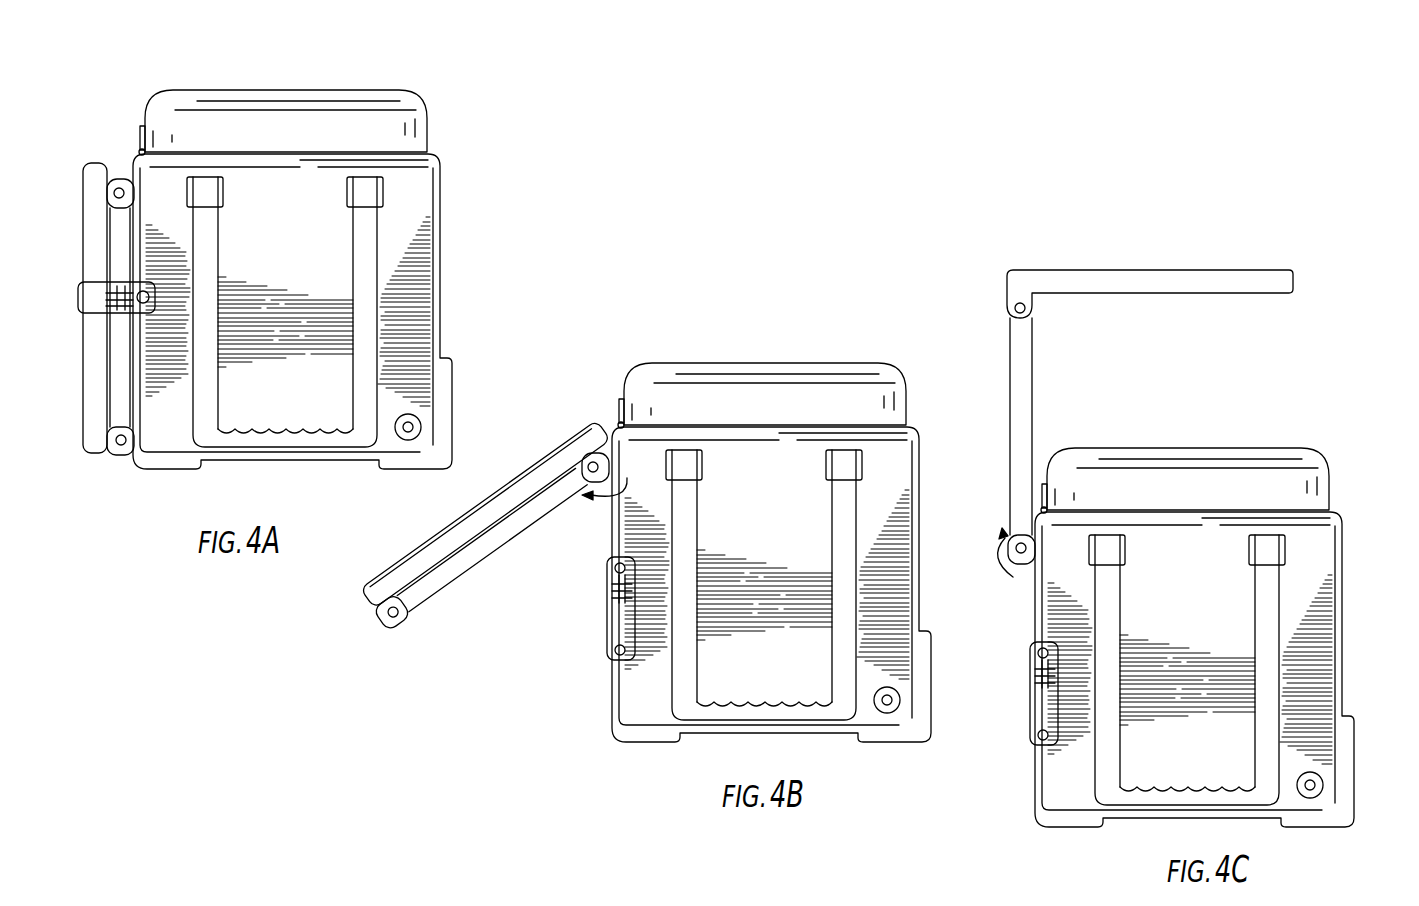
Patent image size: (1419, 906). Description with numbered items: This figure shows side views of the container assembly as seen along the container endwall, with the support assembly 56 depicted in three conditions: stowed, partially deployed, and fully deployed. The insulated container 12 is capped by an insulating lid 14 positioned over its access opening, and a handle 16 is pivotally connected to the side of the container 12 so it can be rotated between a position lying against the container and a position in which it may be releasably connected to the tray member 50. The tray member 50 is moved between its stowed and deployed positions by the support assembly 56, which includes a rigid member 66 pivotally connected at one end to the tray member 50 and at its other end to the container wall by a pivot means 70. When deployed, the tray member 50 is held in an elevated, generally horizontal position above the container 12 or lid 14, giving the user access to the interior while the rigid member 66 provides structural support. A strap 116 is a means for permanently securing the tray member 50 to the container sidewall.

In FIG. 4A, the insulated container 12 is at (462, 312).
In FIG. 4B, the insulated container 12 is at (756, 584).
In FIG. 4C, the insulated container 12 is at (1147, 669).
In FIG. 4A, the insulating lid 14 is at (295, 130).
In FIG. 4B, the insulating lid 14 is at (762, 374).
In FIG. 4C, the insulating lid 14 is at (1185, 444).
In FIG. 4A, the handle 16 is at (400, 396).
In FIG. 4B, the handle 16 is at (788, 585).
In FIG. 4C, the handle 16 is at (1248, 670).
In FIG. 4A, the tray member 50 is at (83, 200).
In FIG. 4B, the tray member 50 is at (485, 499).
In FIG. 4C, the tray member 50 is at (1150, 268).
In FIG. 4A, the support assembly 56 is at (108, 120).
In FIG. 4B, the rigid member 66 is at (481, 548).
In FIG. 4C, the rigid member 66 is at (998, 426).
In FIG. 4A, the pivot means 70 is at (122, 180).
In FIG. 4B, the pivot means 70 is at (590, 416).
In FIG. 4C, the pivot means 70 is at (1007, 578).
In FIG. 4A, the strap 116 is at (122, 306).
In FIG. 4B, the strap 116 is at (572, 608).
In FIG. 4C, the strap 116 is at (1012, 693).